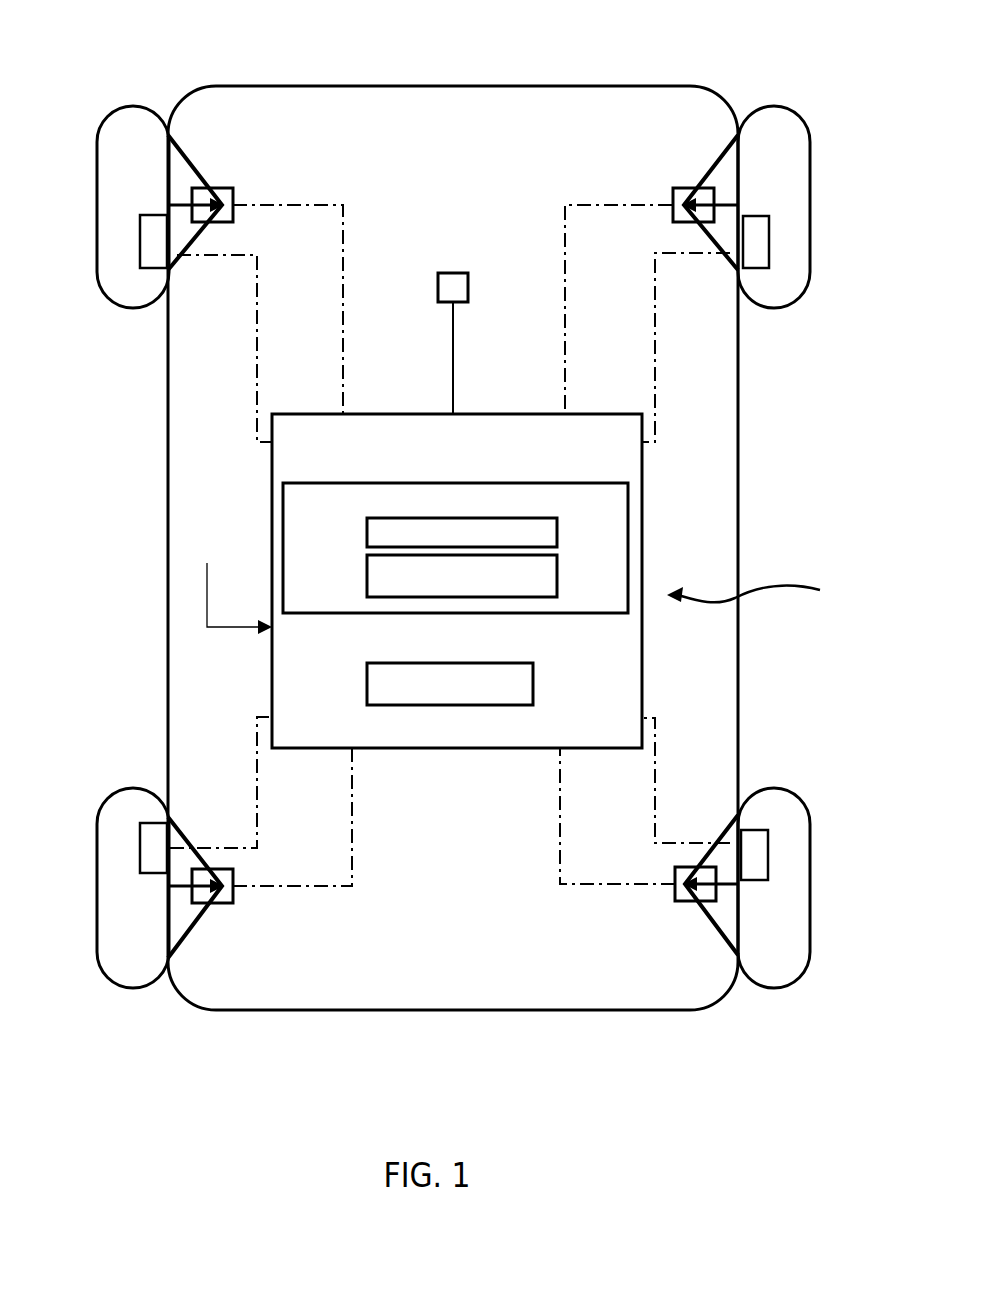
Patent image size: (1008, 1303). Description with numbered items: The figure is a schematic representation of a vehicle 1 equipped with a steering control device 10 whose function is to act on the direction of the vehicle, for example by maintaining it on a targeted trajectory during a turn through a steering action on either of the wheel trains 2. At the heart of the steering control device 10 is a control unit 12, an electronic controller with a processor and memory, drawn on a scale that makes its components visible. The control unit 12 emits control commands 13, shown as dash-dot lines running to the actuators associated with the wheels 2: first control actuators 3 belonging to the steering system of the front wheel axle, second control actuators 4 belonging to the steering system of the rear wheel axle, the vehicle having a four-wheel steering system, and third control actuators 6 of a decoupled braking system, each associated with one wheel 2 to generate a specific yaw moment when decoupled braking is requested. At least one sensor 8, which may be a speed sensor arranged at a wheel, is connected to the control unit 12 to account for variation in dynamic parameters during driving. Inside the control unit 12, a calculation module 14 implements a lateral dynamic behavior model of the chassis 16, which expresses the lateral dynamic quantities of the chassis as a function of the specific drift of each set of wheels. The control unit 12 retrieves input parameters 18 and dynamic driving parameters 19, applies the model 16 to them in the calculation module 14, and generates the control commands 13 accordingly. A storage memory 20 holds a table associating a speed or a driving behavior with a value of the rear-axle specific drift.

The vehicle 1 is at (452, 86).
The wheels 2 is at (133, 106).
The first control actuators 3 is at (220, 186).
The second control actuators 4 is at (234, 906).
The third control actuators 6 is at (140, 243).
The sensor 8 is at (453, 272).
The steering control device 10 is at (763, 592).
The control unit 12 is at (643, 549).
The control commands 13 is at (257, 305).
The calculation module 14 is at (432, 481).
The lateral dynamic behavior model of the chassis 16 is at (450, 590).
The input parameters 18 is at (225, 580).
The dynamic driving parameters 19 is at (225, 580).
The storage memory 20 is at (368, 679).